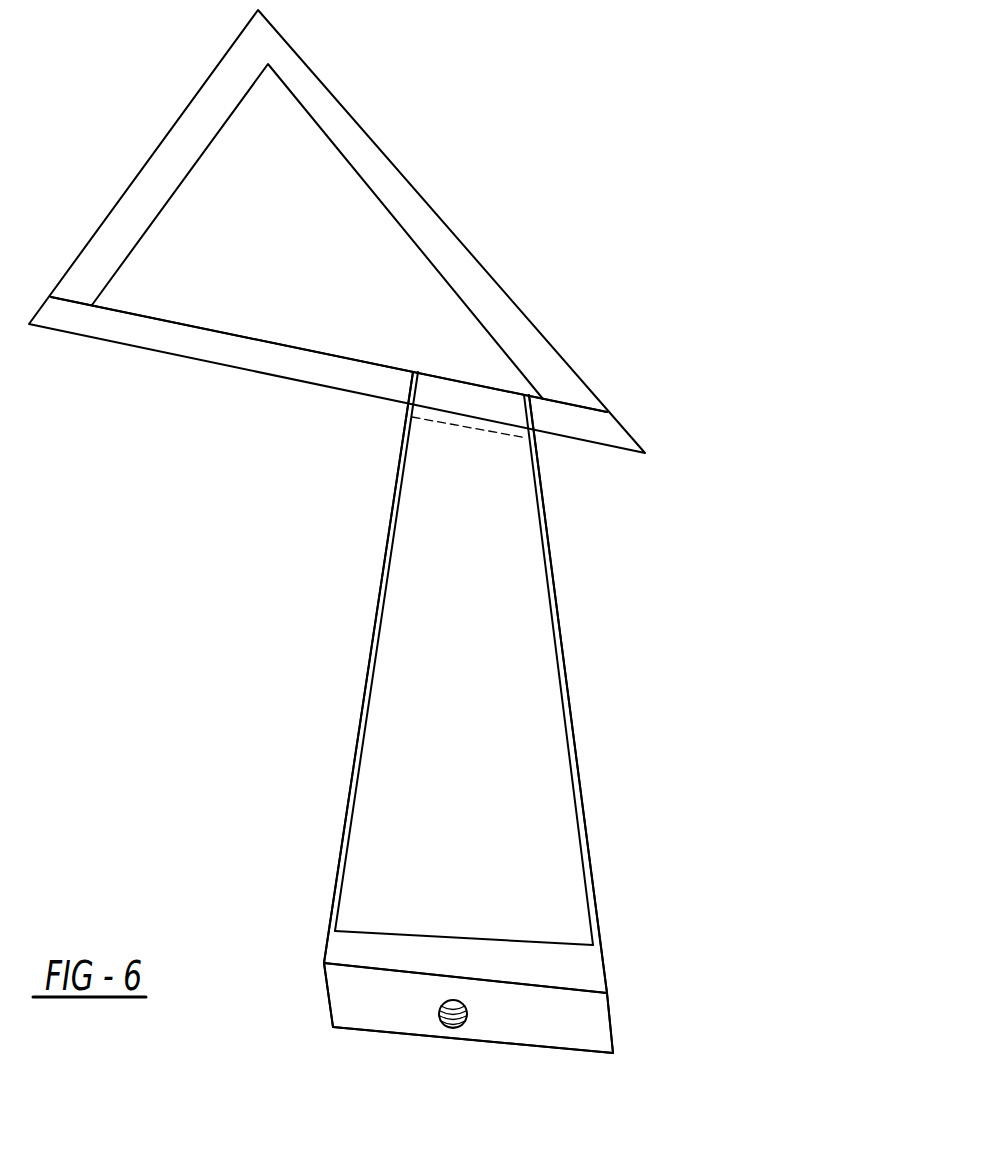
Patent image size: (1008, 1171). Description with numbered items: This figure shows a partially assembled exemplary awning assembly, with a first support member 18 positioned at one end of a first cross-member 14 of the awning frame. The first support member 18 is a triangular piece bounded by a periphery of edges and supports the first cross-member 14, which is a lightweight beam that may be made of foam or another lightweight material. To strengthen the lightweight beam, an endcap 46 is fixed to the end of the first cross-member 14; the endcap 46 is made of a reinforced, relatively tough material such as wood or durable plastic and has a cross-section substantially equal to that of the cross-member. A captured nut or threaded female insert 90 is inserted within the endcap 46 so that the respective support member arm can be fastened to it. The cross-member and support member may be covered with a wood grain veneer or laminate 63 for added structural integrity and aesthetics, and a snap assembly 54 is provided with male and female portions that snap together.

The first support member 18 is at (492, 268).
The first cross-member 14 is at (575, 648).
The endcap 46 is at (479, 398).
The snap assembly 54 is at (580, 758).
The wood grain veneer or laminate 63 is at (364, 671).
The captured nut or threaded female insert 90 is at (441, 1027).